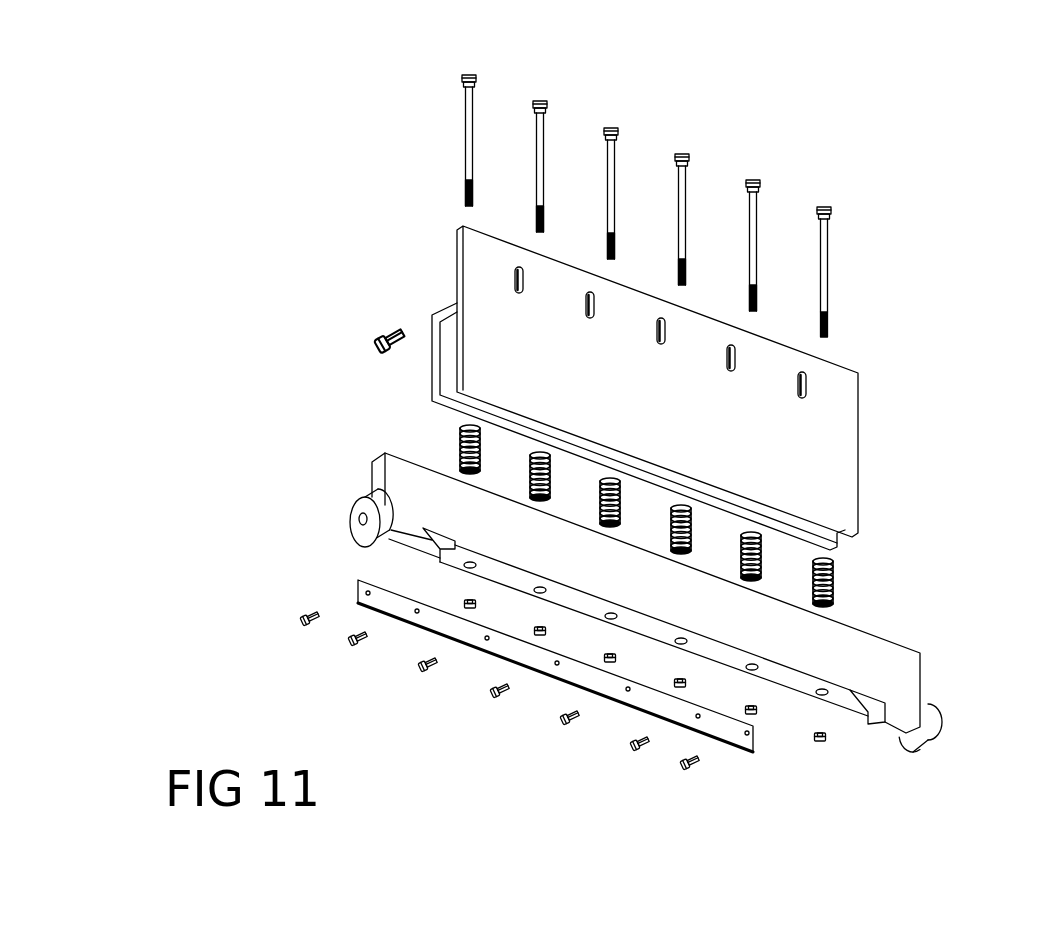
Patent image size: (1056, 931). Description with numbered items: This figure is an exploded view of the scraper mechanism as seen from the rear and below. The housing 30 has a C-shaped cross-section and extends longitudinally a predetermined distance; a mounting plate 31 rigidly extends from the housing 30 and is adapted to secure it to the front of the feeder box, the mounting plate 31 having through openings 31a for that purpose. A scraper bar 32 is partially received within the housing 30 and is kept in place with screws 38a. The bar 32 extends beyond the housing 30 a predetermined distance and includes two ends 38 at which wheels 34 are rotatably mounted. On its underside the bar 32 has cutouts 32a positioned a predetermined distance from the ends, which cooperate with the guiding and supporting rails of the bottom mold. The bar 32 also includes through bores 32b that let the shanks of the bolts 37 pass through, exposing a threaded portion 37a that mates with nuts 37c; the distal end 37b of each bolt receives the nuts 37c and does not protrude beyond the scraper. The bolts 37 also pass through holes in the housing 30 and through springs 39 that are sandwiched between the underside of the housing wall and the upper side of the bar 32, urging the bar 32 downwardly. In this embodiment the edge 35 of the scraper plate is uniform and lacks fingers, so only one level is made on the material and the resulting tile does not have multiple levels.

The housing 30 is at (430, 313).
The mounting plate 31 is at (660, 360).
The through openings 31a is at (515, 272).
The scraper bar 32 is at (606, 589).
The cutouts 32a is at (425, 548).
The through bores 32b is at (823, 701).
The wheels 34 is at (351, 520).
The edge 35 is at (541, 673).
The bolts 37 is at (709, 233).
The threaded portion 37a is at (826, 318).
The distal end 37b is at (823, 336).
The nuts 37c is at (816, 738).
The ends 38 is at (372, 462).
The screws 38a is at (303, 617).
The springs 39 is at (836, 582).